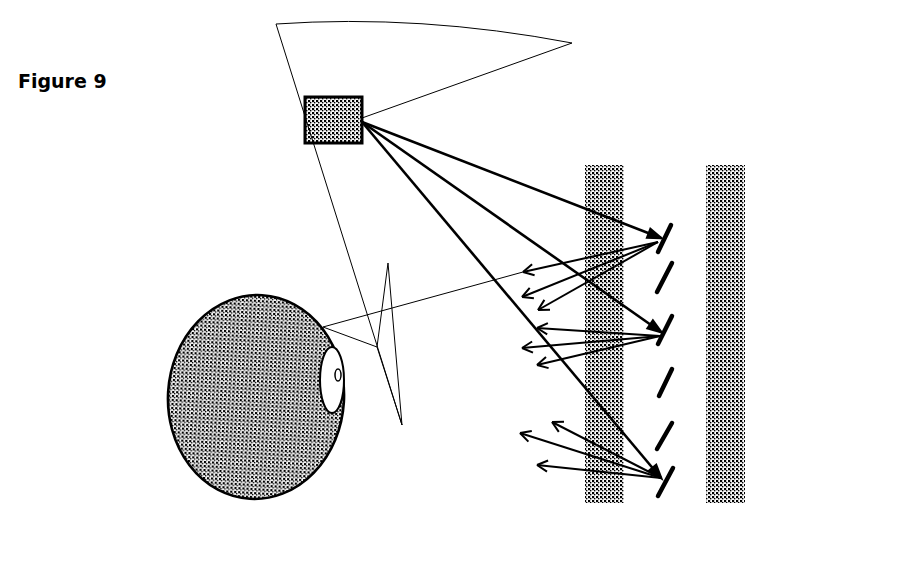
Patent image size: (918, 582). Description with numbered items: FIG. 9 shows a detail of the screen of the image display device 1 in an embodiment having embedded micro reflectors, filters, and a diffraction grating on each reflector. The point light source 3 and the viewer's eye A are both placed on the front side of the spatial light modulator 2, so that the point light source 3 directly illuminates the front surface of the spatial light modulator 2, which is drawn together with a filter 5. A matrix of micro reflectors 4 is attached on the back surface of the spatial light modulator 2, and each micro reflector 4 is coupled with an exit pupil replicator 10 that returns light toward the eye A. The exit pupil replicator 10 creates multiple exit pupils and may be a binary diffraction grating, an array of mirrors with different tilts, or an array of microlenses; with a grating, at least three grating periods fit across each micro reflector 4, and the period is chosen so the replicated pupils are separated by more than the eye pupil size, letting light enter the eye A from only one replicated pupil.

The image display device 1 is at (792, 180).
The spatial light modulator 2 is at (585, 496).
The point light source 3 is at (305, 120).
The micro reflector 4 is at (655, 495).
The filter 5 is at (657, 323).
The exit pupil replicator 10 is at (672, 433).
The viewer's eyes A is at (189, 430).